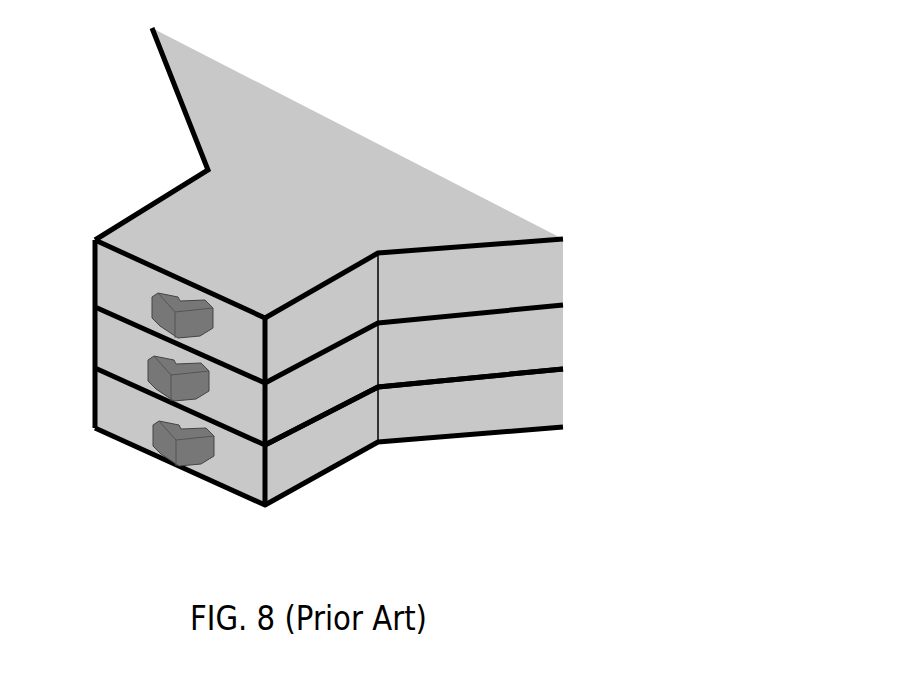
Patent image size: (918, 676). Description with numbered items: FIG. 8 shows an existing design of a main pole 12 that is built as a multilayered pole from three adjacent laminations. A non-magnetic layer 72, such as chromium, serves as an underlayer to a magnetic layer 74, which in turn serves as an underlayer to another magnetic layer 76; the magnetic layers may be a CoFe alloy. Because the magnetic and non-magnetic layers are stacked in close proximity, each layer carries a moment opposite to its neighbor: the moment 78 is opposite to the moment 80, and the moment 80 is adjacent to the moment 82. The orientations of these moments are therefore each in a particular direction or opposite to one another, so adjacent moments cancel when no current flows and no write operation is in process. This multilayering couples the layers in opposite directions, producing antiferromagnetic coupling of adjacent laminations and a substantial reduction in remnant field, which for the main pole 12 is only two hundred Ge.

The main pole 12 is at (104, 125).
The non-magnetic layer 72 is at (303, 430).
The magnetic layer 74 is at (352, 368).
The magnetic layer 76 is at (93, 252).
The moment 78 is at (198, 465).
The moment 80 is at (153, 385).
The moment 82 is at (152, 317).